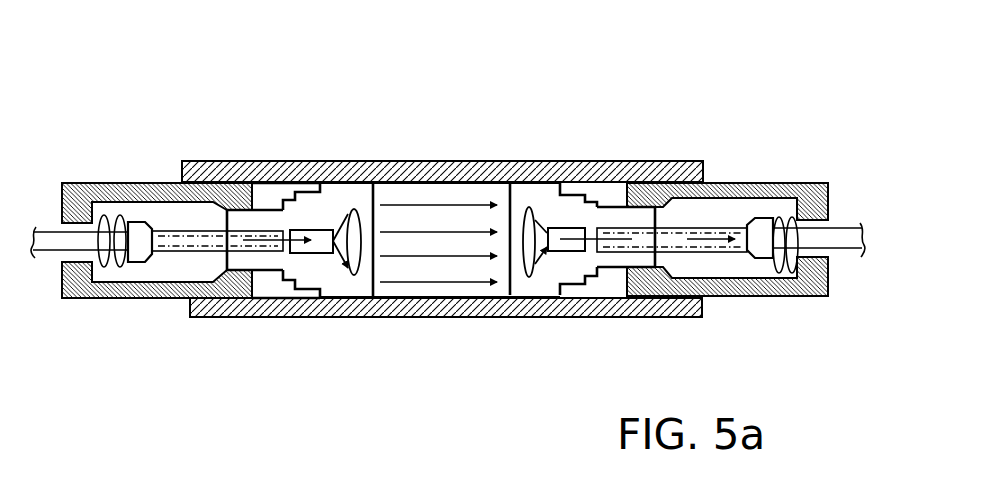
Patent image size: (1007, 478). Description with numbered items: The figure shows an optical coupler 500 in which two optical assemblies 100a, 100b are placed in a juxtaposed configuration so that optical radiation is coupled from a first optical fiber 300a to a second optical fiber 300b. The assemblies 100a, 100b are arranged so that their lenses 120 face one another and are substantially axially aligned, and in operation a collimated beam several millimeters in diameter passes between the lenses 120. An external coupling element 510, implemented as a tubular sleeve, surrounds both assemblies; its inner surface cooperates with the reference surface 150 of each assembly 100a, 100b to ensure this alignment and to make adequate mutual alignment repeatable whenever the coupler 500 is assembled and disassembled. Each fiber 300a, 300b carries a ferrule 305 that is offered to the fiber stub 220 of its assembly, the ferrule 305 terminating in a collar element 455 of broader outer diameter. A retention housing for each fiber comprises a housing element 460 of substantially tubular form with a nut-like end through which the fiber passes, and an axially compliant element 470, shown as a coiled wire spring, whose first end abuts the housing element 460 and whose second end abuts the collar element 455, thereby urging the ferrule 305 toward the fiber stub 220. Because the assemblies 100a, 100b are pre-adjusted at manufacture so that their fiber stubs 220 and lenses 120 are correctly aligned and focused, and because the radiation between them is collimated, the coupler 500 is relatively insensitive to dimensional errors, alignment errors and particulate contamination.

The optical coupler 500 is at (519, 74).
The external coupling element 510 is at (419, 164).
The housing element 460 is at (90, 183).
The collar element 455 is at (129, 226).
The axially compliant element 470 is at (100, 266).
The ferrule 305 is at (170, 298).
The first optical fiber 300a is at (193, 318).
The second optical fiber 300b is at (647, 316).
The reference surface 150 is at (313, 263).
The first assembly 100a is at (288, 298).
The second assembly 100b is at (568, 212).
The lens 120 is at (352, 215).
The fiber stub 220 is at (317, 232).